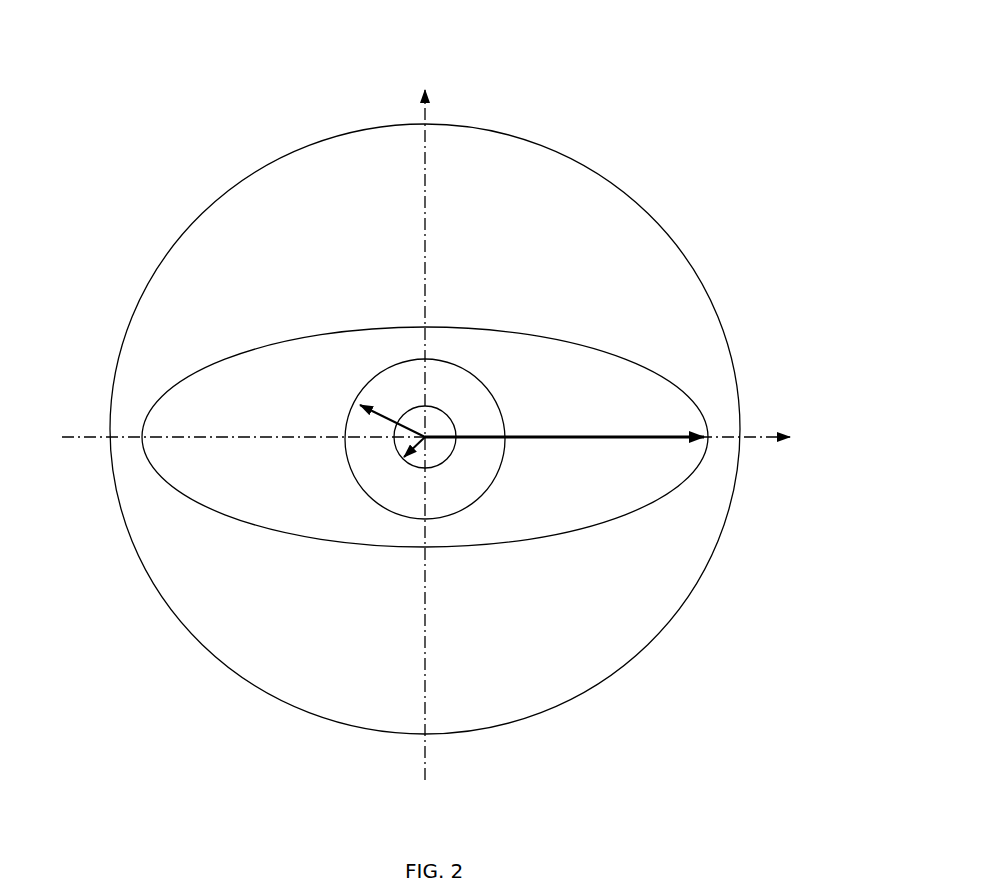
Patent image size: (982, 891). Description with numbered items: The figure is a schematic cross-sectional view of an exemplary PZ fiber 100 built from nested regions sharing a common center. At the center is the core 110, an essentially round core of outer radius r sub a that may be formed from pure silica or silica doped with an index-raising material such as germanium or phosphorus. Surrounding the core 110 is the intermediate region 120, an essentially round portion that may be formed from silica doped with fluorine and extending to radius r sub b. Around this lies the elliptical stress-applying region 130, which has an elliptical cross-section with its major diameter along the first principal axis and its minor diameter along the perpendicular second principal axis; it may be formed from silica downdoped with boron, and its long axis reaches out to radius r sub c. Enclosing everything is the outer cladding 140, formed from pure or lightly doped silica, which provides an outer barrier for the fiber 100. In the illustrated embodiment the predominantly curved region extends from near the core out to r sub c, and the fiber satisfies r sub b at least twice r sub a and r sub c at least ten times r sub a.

The PZ fiber 100 is at (153, 111).
The core 110 is at (440, 424).
The intermediate region 120 is at (395, 389).
The elliptical stress-applying region 130 is at (644, 408).
The outer cladding 140 is at (522, 180).